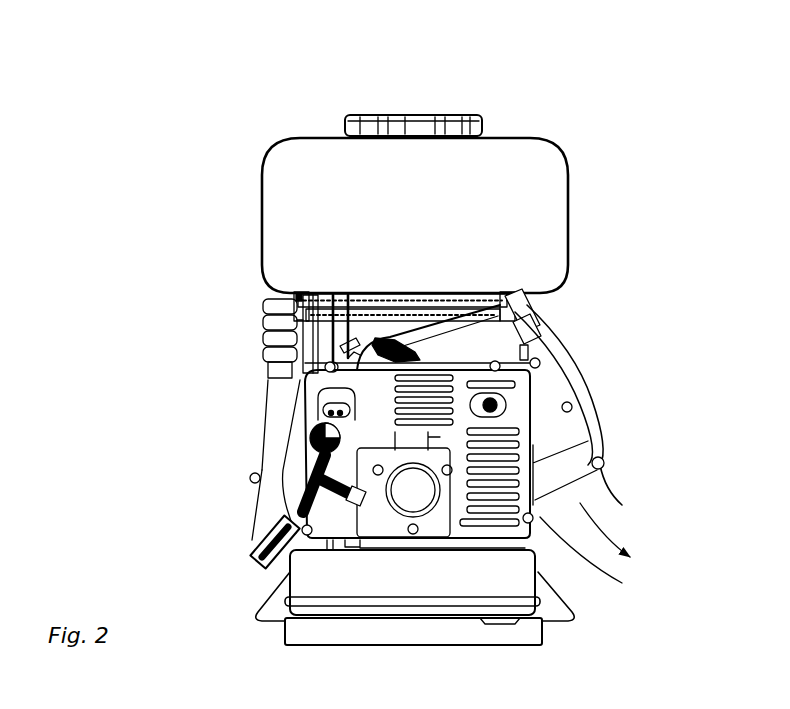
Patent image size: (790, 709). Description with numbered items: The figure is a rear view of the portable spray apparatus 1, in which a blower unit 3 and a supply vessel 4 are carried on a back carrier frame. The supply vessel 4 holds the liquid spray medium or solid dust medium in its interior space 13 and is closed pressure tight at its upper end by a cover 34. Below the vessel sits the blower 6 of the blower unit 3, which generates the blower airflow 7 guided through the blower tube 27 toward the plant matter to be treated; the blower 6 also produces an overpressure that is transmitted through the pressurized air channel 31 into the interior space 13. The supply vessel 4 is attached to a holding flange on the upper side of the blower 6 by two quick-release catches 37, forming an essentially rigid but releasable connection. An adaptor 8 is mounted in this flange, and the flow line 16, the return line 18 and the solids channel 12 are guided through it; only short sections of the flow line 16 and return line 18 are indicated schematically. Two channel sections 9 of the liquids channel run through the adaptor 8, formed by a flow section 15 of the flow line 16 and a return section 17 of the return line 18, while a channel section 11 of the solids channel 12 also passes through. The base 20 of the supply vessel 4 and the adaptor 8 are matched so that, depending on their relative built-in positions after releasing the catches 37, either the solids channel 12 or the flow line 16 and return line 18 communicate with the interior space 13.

The portable spray apparatus 1 is at (148, 233).
The blower unit 3 is at (275, 492).
The supply vessel 4 is at (261, 172).
The blower 6 is at (545, 417).
The blower airflow 7 is at (612, 537).
The adaptor 8 is at (438, 298).
The channel sections 9 is at (349, 289).
The channel section 11 is at (512, 294).
The solids channel 12 is at (535, 318).
The interior space 13 is at (425, 190).
The flow section 15 is at (308, 292).
The flow line 16 is at (273, 355).
The return section 17 is at (370, 292).
The return line 18 is at (278, 388).
The base 20 is at (477, 288).
The blower tube 27 is at (612, 488).
The pressurized air channel 31 is at (265, 312).
The cover 34 is at (472, 128).
The quick-release catches 37 is at (270, 288).